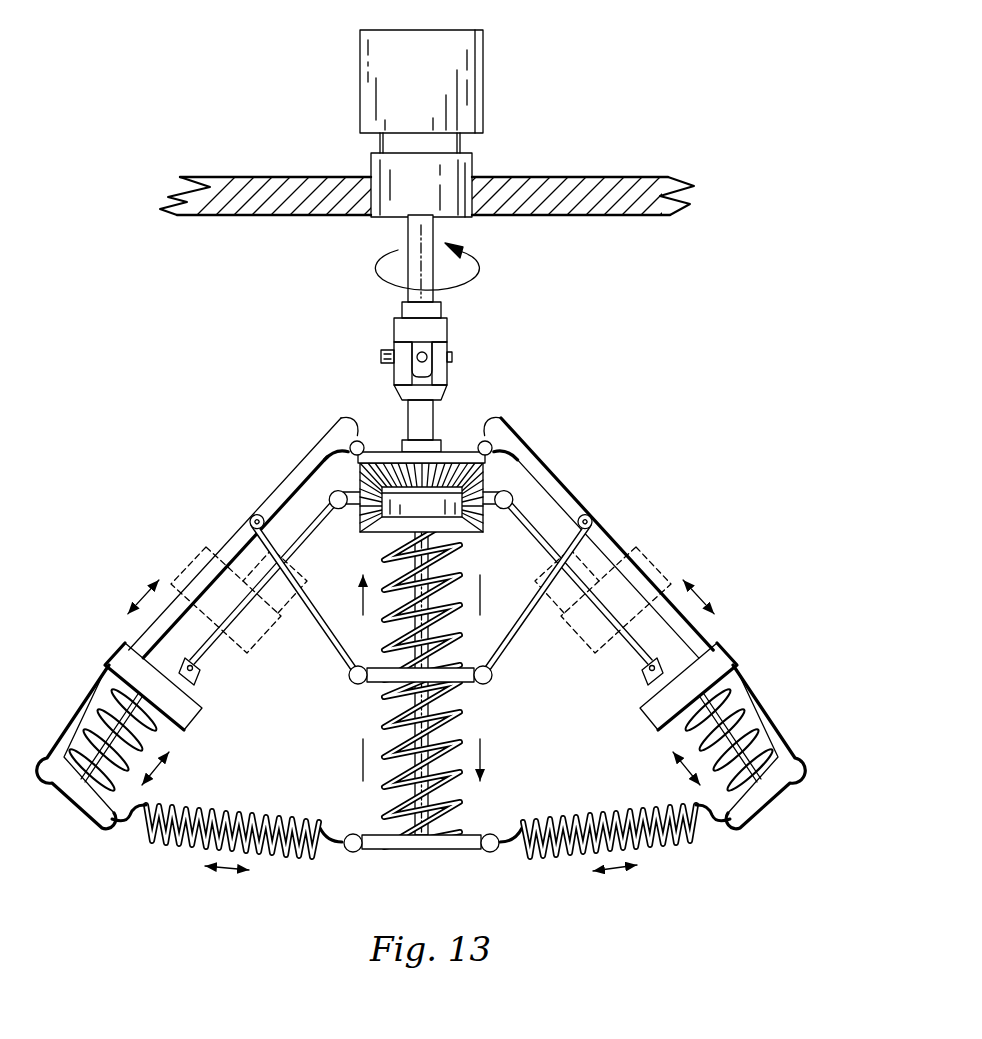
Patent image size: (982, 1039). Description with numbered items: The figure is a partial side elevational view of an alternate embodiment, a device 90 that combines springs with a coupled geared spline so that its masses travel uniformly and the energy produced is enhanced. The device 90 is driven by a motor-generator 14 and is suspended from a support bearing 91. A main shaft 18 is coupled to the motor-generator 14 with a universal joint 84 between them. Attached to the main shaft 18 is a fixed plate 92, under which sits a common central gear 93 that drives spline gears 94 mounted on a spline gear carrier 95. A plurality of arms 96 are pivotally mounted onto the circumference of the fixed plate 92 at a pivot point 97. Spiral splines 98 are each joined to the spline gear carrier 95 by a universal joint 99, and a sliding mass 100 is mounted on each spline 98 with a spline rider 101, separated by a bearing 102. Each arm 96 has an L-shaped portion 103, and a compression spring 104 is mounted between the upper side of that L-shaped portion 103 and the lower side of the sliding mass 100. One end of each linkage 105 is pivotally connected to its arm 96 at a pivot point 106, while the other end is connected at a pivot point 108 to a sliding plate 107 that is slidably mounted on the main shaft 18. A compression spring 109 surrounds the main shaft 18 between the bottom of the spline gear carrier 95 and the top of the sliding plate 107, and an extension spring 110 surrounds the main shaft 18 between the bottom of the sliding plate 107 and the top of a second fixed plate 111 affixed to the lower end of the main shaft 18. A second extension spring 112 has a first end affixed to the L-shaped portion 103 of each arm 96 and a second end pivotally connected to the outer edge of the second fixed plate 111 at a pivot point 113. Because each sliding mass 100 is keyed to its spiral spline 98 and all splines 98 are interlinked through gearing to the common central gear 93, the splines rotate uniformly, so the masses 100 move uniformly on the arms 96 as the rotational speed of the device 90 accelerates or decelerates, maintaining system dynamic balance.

The motor-generator 14 is at (483, 73).
The support bearing 91 is at (472, 158).
The universal joint 84 is at (480, 337).
The device 90 is at (714, 378).
The fixed plate 92 is at (455, 450).
The common central gear 93 is at (387, 450).
The pivot point 97 is at (538, 448).
The arm 96 is at (545, 458).
The universal joint 99 is at (513, 492).
The spiral spline 98 is at (540, 527).
The pivot point 106 is at (598, 523).
The spline rider 101 is at (693, 657).
The sliding mass 100 is at (735, 657).
The compression spring 104 is at (722, 740).
The L-shaped portion 103 is at (766, 808).
The bearing 102 is at (645, 688).
The spline gear 94 is at (488, 515).
The spline gear carrier 95 is at (354, 515).
The linkage 105 is at (502, 662).
The compression spring 109 is at (383, 648).
The pivot point 108 is at (487, 685).
The sliding plate 107 is at (468, 685).
The main shaft 18 is at (410, 712).
The extension spring 110 is at (385, 825).
The second fixed plate 111 is at (428, 852).
The pivot point 113 is at (493, 852).
The second extension spring 112 is at (693, 843).